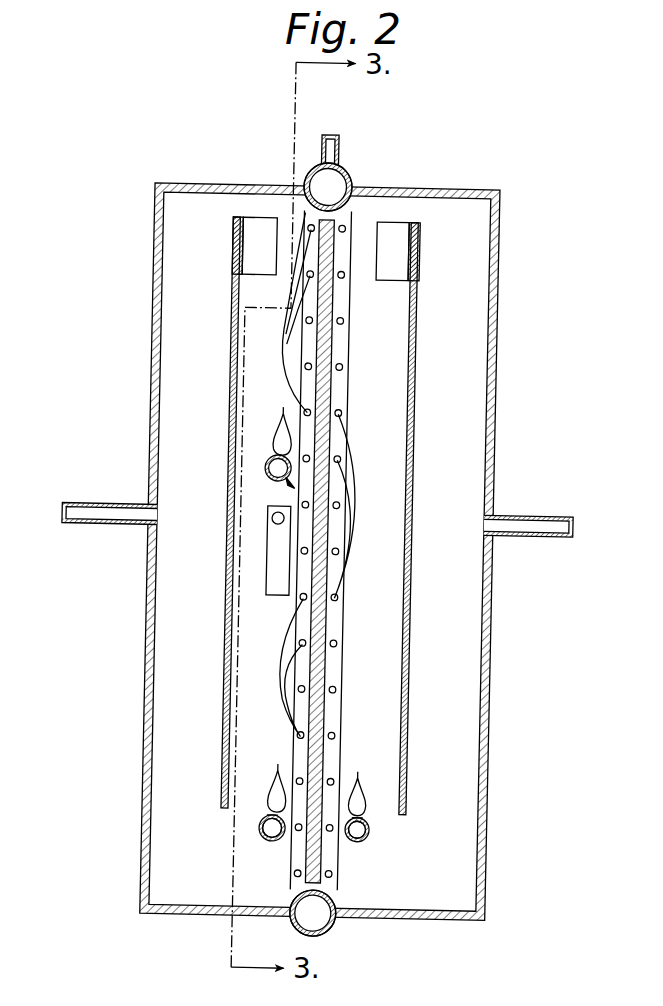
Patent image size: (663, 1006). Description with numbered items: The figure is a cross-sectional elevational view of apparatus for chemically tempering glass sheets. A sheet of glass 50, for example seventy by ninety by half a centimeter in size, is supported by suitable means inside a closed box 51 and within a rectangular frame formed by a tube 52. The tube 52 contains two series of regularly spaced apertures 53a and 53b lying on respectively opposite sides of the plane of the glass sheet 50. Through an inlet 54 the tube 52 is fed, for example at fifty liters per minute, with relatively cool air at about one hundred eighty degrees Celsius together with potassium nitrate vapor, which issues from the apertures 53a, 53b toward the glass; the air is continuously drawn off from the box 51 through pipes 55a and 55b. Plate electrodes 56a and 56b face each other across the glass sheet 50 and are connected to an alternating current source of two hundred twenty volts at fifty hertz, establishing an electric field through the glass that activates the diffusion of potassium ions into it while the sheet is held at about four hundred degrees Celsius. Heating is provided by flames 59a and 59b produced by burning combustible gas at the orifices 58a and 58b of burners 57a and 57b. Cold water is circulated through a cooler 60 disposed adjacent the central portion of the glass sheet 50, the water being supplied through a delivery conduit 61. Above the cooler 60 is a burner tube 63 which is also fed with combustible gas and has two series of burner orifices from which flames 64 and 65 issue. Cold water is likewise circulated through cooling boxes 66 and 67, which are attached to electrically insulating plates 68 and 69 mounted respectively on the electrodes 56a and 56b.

The sheet of glass 50 is at (323, 390).
The closed box 51 is at (453, 190).
The tube 52 is at (350, 170).
The apertures 53a is at (287, 337).
The apertures 53b is at (367, 527).
The inlet 54 is at (338, 142).
The pipe 55a is at (127, 513).
The pipe 55b is at (520, 523).
The plate electrode 56a is at (229, 634).
The plate electrode 56b is at (410, 597).
The burner 57a is at (268, 840).
The burner 57b is at (363, 840).
The orifice 58a is at (262, 810).
The orifice 58b is at (370, 808).
The flame 59a is at (270, 797).
The flame 59b is at (360, 798).
The cooler 60 is at (277, 565).
The delivery conduit 61 is at (270, 518).
The burner tube 63 is at (268, 463).
The flames 64 is at (277, 442).
The flames 65 is at (289, 487).
The cooling box 66 is at (262, 267).
The cooling box 67 is at (387, 270).
The electrically insulating plate 68 is at (240, 253).
The electrically insulating plate 69 is at (418, 245).